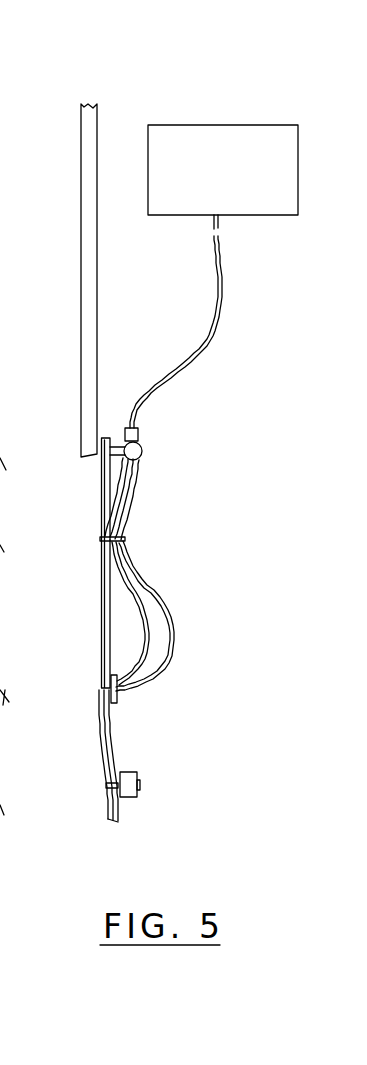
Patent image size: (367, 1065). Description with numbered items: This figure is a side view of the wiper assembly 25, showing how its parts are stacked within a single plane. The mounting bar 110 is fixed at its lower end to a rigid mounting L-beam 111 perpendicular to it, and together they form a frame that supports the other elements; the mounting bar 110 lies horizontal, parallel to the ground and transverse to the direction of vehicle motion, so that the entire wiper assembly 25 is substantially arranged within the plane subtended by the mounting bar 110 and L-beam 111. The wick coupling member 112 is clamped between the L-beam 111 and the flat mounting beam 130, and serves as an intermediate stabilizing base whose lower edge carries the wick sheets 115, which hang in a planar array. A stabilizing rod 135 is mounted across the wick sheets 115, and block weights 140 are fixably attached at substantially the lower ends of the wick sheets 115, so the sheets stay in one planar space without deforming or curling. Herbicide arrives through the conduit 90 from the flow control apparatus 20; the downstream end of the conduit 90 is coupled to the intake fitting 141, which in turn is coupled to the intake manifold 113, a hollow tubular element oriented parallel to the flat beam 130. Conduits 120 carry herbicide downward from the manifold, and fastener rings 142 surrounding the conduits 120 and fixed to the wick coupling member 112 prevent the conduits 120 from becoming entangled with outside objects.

The flow control apparatus 20 is at (160, 132).
The wiper assembly 25 is at (188, 531).
The conduit 90 is at (220, 267).
The mounting bar 110 is at (85, 143).
The mounting L-beam 111 is at (100, 458).
The wick coupling member 112 is at (103, 620).
The intake manifold 113 is at (143, 460).
The wick sheets 115 is at (102, 747).
The conduits 120 is at (147, 612).
The flat mounting beam 130 is at (113, 437).
The stabilizing rod 135 is at (108, 788).
The block weights 140 is at (137, 797).
The intake fitting 141 is at (138, 433).
The fastener rings 142 is at (100, 539).